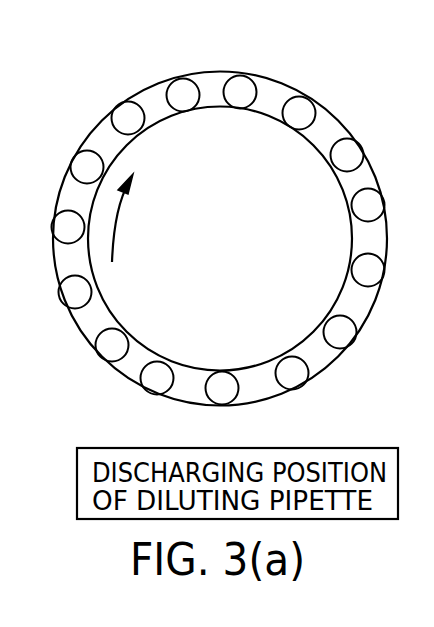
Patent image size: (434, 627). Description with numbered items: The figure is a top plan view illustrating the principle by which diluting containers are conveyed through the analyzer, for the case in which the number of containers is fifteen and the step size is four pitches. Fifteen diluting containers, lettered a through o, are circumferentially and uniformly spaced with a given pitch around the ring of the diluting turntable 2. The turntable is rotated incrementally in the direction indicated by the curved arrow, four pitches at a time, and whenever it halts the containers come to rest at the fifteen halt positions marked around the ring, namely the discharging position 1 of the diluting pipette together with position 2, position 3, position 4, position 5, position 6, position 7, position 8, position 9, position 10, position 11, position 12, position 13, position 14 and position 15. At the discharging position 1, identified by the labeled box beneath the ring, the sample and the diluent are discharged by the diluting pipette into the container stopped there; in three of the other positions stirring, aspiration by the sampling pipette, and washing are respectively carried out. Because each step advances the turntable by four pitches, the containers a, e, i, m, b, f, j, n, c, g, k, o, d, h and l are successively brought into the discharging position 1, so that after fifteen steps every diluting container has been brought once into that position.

The discharging position of the diluting pipette 1 is at (222, 404).
The diluting turntable 2 is at (220, 213).
The position 3 is at (103, 354).
The position 4 is at (65, 299).
The position 5 is at (56, 222).
The position 6 is at (76, 162).
The position 7 is at (122, 109).
The position 8 is at (181, 82).
The position 9 is at (240, 80).
The position 10 is at (308, 99).
The position 11 is at (359, 148).
The position 12 is at (384, 204).
The position 13 is at (384, 274).
The position 14 is at (353, 342).
The position 15 is at (297, 388).